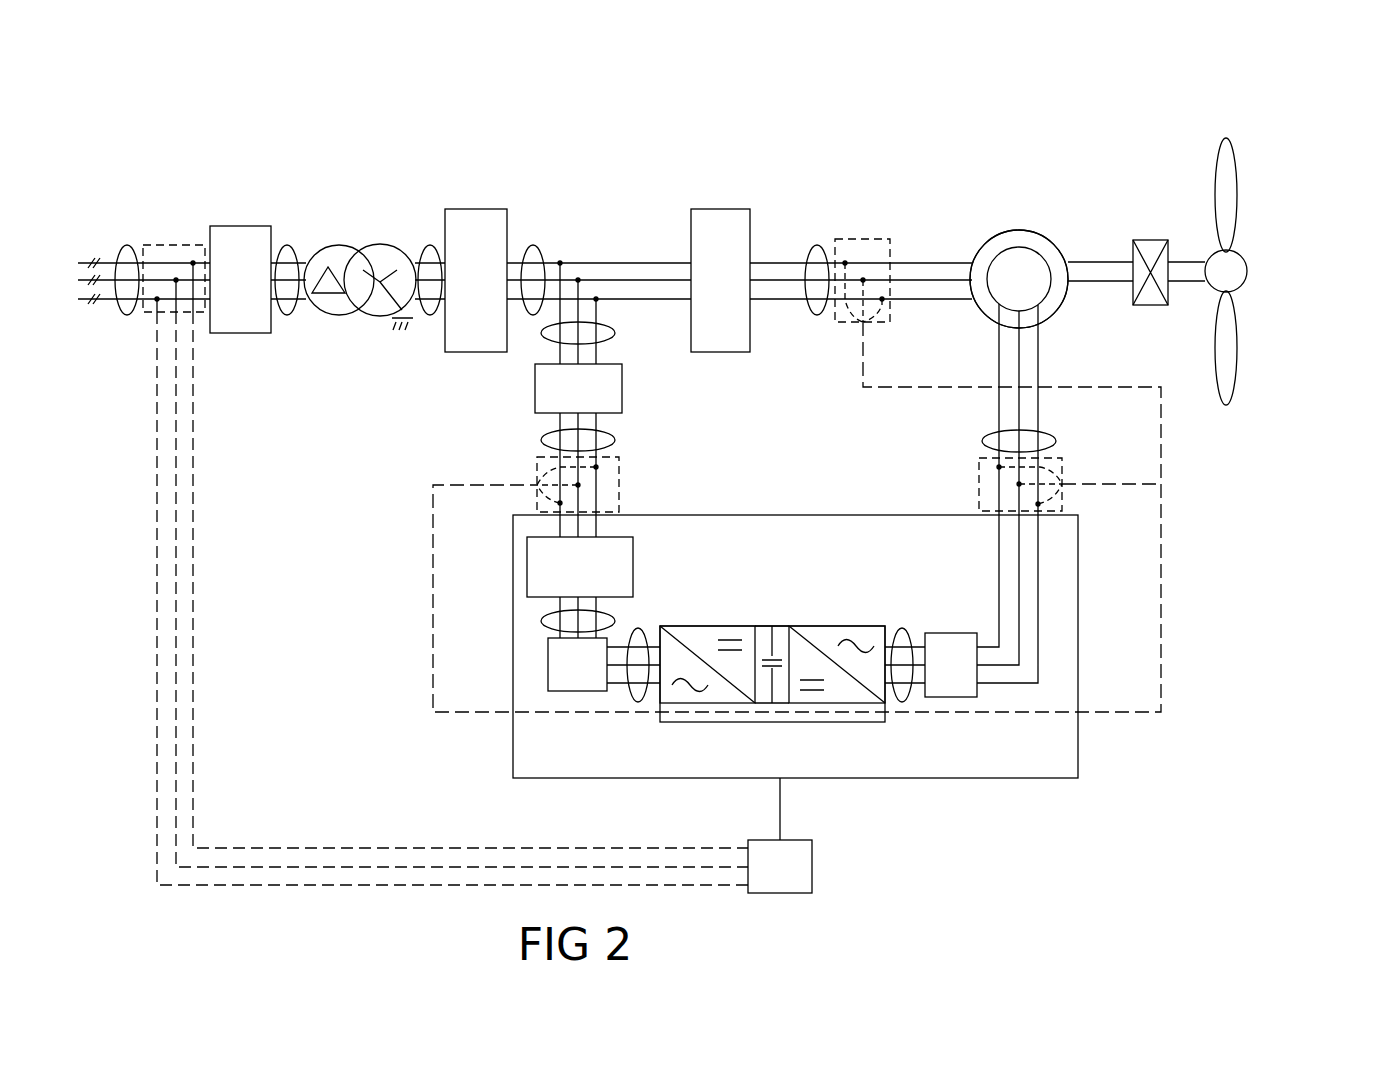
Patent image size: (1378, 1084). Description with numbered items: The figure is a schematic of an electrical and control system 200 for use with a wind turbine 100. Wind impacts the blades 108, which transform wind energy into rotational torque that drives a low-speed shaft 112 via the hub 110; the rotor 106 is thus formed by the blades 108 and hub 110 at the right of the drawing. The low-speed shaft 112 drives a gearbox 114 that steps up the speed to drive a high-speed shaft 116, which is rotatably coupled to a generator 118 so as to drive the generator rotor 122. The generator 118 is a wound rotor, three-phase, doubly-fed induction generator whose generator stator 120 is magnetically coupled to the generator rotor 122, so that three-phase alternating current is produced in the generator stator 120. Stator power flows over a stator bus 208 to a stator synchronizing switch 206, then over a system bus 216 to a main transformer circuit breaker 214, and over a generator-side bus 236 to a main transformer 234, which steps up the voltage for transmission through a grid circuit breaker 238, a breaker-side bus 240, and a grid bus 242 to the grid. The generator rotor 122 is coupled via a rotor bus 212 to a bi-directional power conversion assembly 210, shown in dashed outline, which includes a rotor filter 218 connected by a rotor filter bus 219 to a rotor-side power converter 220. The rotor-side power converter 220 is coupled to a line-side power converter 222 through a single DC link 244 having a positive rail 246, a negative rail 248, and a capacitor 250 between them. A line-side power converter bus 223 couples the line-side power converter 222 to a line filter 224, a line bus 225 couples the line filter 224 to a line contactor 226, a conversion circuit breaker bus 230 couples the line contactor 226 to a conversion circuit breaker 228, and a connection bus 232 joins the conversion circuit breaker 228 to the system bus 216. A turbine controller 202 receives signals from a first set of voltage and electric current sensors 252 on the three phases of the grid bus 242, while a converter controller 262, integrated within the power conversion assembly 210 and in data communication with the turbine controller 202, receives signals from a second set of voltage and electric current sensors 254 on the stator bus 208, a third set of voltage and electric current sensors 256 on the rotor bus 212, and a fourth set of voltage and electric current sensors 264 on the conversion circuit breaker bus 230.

The wind turbine 100 is at (1210, 118).
The rotor 106 is at (1282, 271).
The blades 108 is at (1253, 244).
The hub 110 is at (1248, 266).
The low-speed shaft 112 is at (1185, 262).
The gearbox 114 is at (1148, 240).
The high-speed shaft 116 is at (1100, 262).
The generator 118 is at (1022, 192).
The generator stator 120 is at (1020, 231).
The generator rotor 122 is at (1012, 262).
The electrical and control system 200 is at (181, 99).
The turbine controller 202 is at (760, 884).
The stator synchronizing switch 206 is at (715, 209).
The stator bus 208 is at (817, 245).
The power conversion assembly 210 is at (1078, 642).
The rotor bus 212 is at (1057, 441).
The main transformer circuit breaker 214 is at (475, 209).
The system bus 216 is at (533, 245).
The rotor filter 218 is at (950, 633).
The rotor filter bus 219 is at (902, 628).
The rotor-side power converter 220 is at (890, 715).
The line-side power converter 222 is at (645, 702).
The line-side power converter bus 223 is at (640, 628).
The line filter 224 is at (548, 664).
The line bus 225 is at (541, 621).
The line contactor 226 is at (527, 567).
The conversion circuit breaker 228 is at (622, 388).
The conversion circuit breaker bus 230 is at (615, 440).
The connection bus 232 is at (614, 336).
The main transformer 234 is at (380, 245).
The generator-side bus 236 is at (430, 245).
The grid circuit breaker 238 is at (227, 226).
The breaker-side bus 240 is at (287, 247).
The grid bus 242 is at (127, 247).
The DC link 244 is at (754, 584).
The positive rail 246 is at (790, 635).
The negative rail 248 is at (783, 722).
The capacitor 250 is at (771, 655).
The first set of voltage and electric current sensors 252 is at (140, 326).
The second set of voltage and electric current sensors 254 is at (880, 232).
The third set of voltage and electric current sensors 256 is at (964, 483).
The converter controller 262 is at (838, 713).
The fourth set of voltage and electric current sensors 264 is at (619, 485).